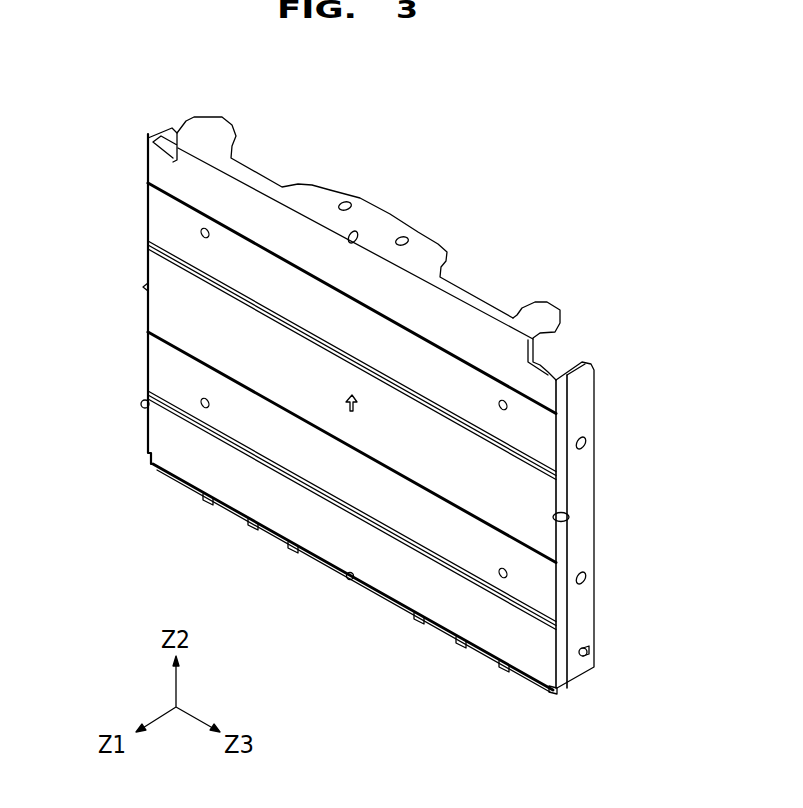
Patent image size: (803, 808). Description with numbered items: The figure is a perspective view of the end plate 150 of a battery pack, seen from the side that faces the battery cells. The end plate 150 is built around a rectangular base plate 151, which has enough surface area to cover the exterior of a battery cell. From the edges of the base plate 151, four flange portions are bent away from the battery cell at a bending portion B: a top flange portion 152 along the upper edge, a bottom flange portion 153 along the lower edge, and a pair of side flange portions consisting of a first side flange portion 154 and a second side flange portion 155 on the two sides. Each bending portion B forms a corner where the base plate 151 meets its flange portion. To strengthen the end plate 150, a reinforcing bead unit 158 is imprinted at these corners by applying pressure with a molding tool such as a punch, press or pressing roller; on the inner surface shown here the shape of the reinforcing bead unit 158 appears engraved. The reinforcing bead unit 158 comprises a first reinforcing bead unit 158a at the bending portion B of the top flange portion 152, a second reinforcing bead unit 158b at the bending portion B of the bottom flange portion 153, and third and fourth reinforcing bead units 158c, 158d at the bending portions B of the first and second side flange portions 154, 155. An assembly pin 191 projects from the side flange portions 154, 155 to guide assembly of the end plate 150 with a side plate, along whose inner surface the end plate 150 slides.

The end plate 150 is at (565, 189).
The base plate 151 is at (200, 465).
The top flange portion 152 is at (430, 246).
The bottom flange portion 153 is at (556, 690).
The first side flange portion 154 is at (586, 490).
The second side flange portion 155 is at (170, 128).
The reinforcing bead unit 158 is at (354, 230).
The first reinforcing bead unit 158a is at (352, 236).
The second reinforcing bead unit 158b is at (347, 580).
The third reinforcing bead unit 158c is at (570, 518).
The fourth reinforcing bead unit 158d is at (147, 288).
The assembly pin 191 is at (143, 403).
The bending portion B is at (505, 315).